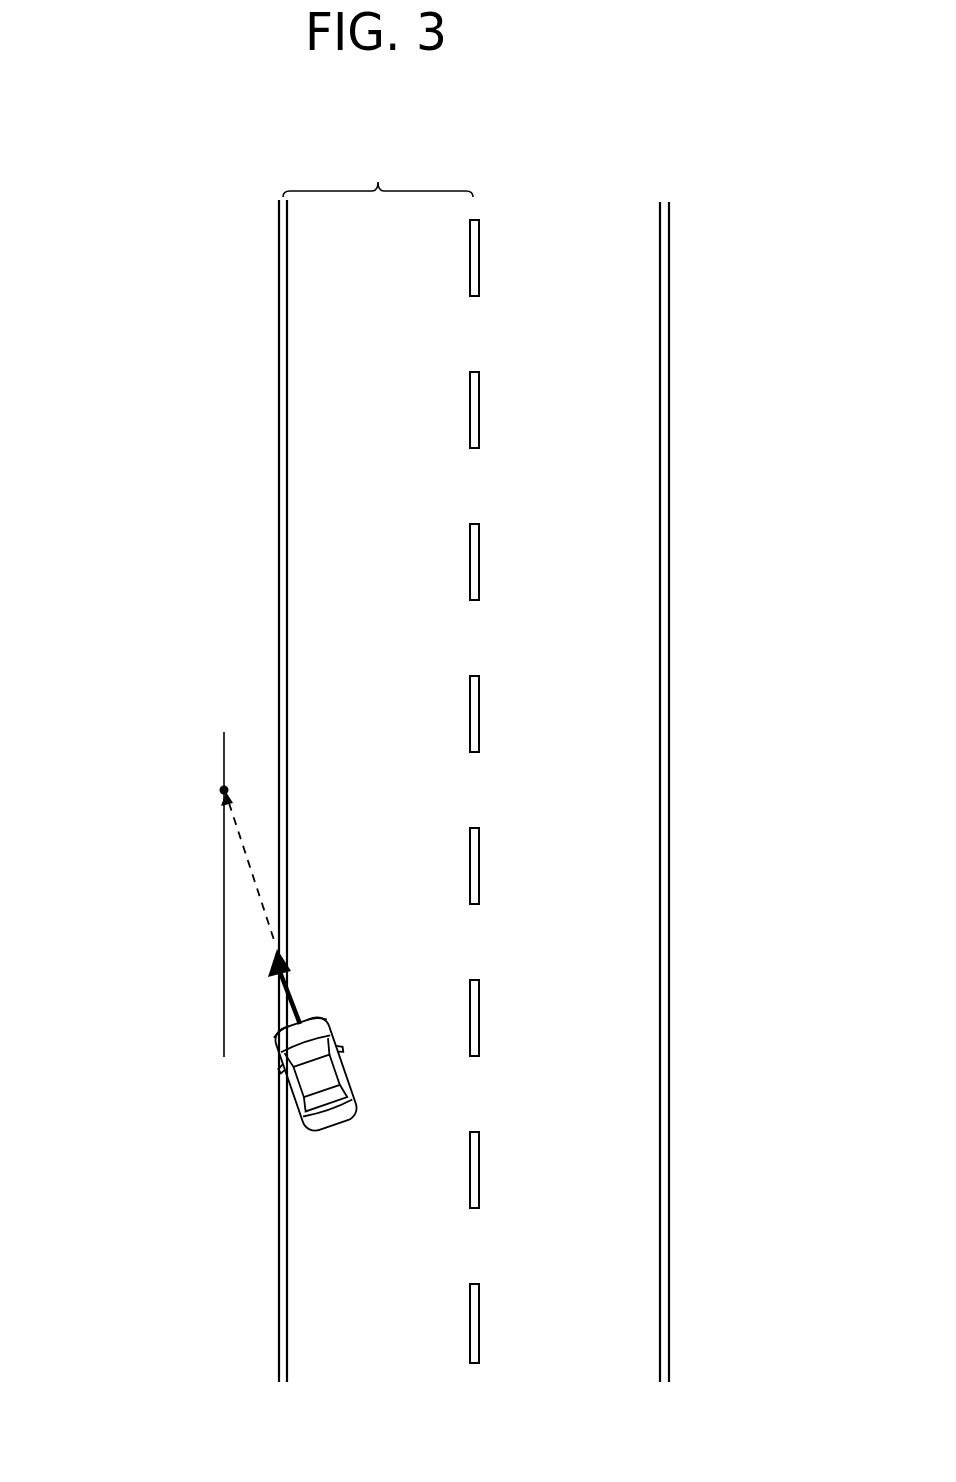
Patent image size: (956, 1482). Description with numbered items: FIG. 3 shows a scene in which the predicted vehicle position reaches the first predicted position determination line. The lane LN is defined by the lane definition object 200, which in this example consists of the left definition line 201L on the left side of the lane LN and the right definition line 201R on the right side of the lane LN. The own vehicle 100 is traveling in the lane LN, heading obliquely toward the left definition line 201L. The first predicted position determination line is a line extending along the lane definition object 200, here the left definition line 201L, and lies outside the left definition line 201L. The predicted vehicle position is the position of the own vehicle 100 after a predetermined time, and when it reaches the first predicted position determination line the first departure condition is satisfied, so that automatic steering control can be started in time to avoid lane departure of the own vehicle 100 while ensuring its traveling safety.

The lane definition object 200 is at (373, 791).
The left definition line 201L is at (285, 257).
The right definition line 201R is at (478, 258).
The lane LN is at (378, 170).
The own vehicle 100 is at (343, 1133).